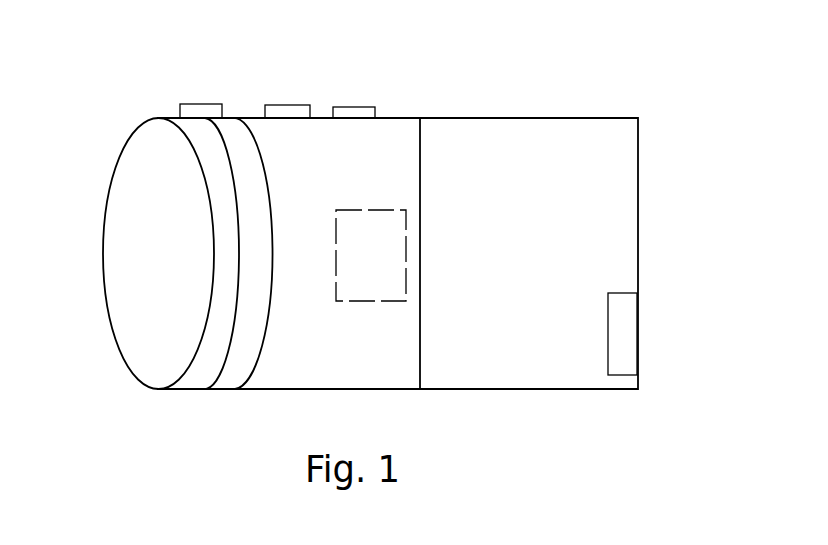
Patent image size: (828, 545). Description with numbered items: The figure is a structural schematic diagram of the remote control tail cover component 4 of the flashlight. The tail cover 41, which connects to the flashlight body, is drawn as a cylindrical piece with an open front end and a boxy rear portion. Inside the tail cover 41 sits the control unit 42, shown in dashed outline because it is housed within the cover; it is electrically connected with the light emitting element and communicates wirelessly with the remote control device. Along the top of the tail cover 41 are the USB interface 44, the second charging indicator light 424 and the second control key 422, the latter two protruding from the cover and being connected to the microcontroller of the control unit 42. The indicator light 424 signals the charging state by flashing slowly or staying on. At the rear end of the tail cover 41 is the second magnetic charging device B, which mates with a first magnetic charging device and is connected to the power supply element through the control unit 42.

The remote control tail cover component 4 is at (563, 182).
The tail cover 41 is at (150, 374).
The control unit 42 is at (395, 208).
The USB interface 44 is at (193, 108).
The second charging indicator light 424 is at (288, 110).
The second control key 422 is at (362, 112).
The second magnetic charging device B is at (628, 330).